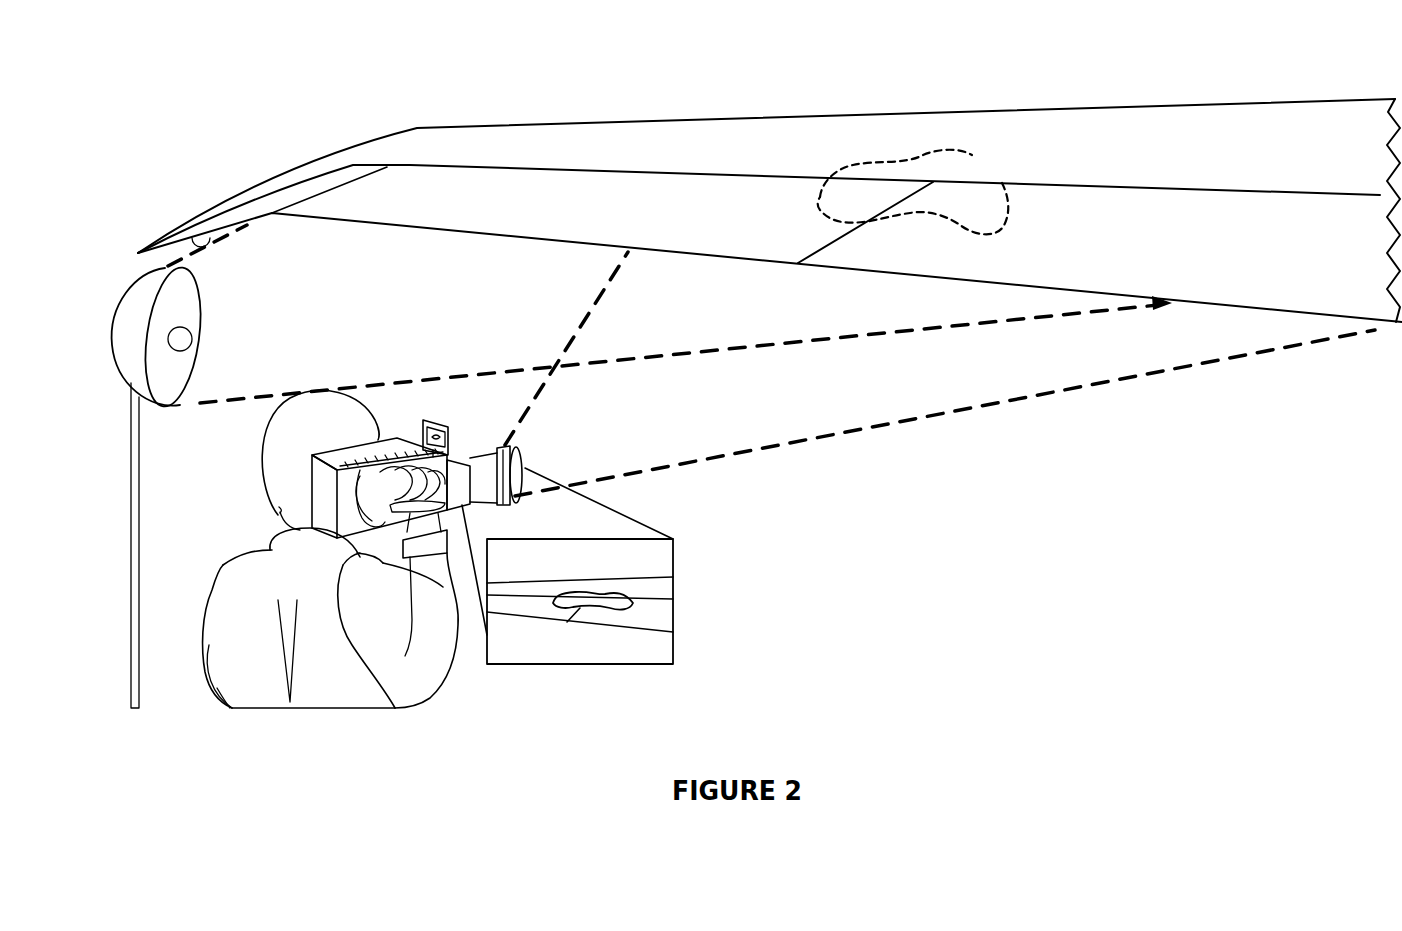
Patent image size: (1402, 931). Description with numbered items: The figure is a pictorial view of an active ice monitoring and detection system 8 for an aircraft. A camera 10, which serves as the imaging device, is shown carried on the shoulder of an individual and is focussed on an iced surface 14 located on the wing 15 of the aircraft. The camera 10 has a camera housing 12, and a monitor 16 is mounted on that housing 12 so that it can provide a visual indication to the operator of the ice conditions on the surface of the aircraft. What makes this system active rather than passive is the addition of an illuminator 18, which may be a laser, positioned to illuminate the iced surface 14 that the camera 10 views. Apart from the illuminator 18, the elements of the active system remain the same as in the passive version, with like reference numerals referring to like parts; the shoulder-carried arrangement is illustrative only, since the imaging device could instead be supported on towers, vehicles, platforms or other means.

The ice monitoring and detection system 8 is at (688, 602).
The camera 10 is at (362, 458).
The camera housing 12 is at (325, 493).
The iced surface 14 is at (962, 175).
The wing 15 is at (546, 128).
The monitor 16 is at (449, 428).
The illuminator 18 is at (118, 308).